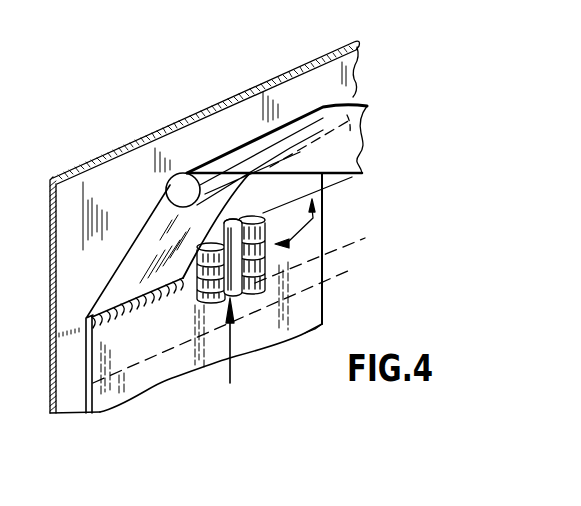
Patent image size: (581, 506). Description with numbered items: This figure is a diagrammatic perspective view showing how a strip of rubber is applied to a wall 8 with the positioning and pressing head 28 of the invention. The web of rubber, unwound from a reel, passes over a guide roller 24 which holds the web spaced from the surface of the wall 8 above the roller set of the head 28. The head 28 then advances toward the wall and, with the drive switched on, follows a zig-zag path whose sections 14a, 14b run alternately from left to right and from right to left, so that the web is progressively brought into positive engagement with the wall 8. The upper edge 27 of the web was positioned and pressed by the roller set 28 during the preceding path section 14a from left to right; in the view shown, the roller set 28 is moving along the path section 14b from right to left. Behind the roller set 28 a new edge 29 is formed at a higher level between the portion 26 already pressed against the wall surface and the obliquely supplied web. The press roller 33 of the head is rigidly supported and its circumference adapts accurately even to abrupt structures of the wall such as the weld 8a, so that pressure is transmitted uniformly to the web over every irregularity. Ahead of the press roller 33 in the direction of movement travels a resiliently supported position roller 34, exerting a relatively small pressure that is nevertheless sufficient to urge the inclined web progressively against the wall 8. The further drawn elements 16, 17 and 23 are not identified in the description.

The wall 8 is at (73, 293).
The weld 8a is at (55, 337).
The zig-zag path section 14a is at (170, 334).
The zig-zag path section 14b is at (285, 218).
The door edge portion 16 is at (313, 218).
The gap / movement direction 17 is at (313, 218).
The mounting plate 23 is at (330, 98).
The guide roller 24 is at (183, 190).
The pressed web portion 26 is at (103, 398).
The upper edge of the web 27 is at (128, 323).
The positioning and pressing head 28 is at (228, 353).
The new edge 29 is at (348, 180).
The press roller 33 is at (237, 296).
The position roller 34 is at (248, 217).